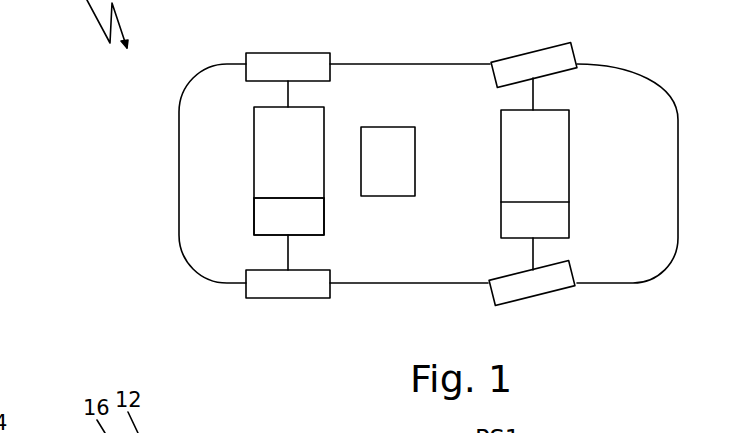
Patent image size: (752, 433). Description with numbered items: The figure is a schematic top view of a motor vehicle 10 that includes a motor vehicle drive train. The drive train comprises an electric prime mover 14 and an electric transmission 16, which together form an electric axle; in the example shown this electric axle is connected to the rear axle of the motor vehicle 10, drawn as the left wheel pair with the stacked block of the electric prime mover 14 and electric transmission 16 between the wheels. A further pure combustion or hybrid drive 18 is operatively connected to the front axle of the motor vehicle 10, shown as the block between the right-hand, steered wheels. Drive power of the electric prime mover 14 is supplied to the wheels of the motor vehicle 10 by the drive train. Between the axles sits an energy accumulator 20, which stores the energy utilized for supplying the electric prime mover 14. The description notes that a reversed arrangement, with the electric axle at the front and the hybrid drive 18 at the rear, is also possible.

The motor vehicle 10 is at (179, 203).
The electric prime mover 14 is at (323, 213).
The electric transmission 16 is at (254, 175).
The further pure combustion or hybrid drive 18 is at (597, 237).
The energy accumulator 20 is at (388, 127).